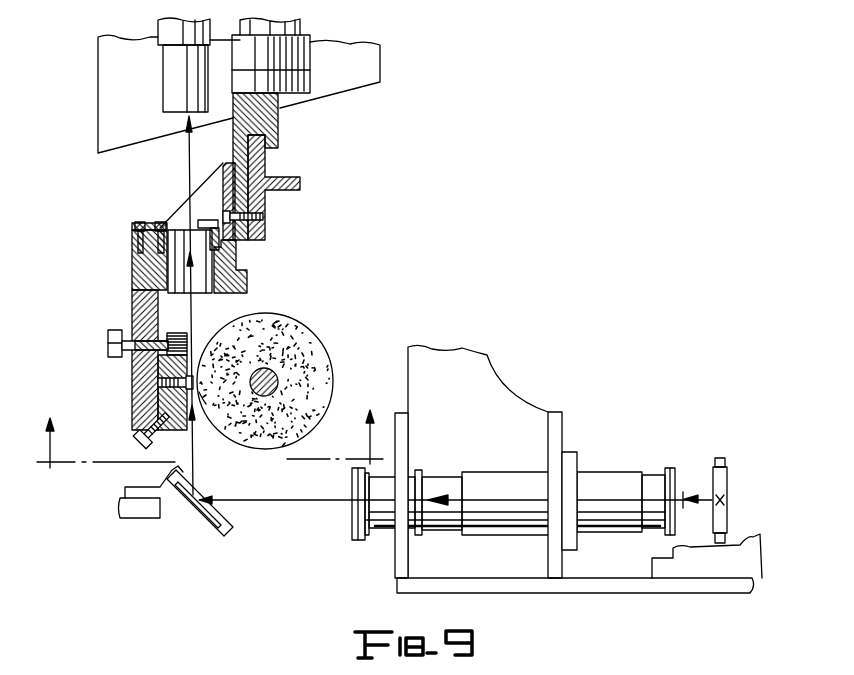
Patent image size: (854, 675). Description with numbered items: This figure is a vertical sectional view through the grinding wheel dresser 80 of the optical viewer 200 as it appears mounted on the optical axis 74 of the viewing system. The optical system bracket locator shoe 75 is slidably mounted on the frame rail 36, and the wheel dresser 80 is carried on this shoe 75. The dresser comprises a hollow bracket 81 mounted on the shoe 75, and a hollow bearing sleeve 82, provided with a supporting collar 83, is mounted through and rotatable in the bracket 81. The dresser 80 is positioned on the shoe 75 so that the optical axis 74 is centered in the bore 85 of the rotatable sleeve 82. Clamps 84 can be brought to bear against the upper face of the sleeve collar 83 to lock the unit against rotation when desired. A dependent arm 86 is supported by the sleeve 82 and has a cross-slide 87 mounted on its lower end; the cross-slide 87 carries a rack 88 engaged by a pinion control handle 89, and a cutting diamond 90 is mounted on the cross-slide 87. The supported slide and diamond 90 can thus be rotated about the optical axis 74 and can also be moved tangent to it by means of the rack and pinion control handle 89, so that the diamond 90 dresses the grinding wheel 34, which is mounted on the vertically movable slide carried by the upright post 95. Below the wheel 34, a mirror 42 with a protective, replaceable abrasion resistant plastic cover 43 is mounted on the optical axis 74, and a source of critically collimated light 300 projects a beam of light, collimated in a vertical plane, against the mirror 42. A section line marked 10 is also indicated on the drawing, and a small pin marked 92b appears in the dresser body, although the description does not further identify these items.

The optical viewer 200 is at (153, 54).
The optical system bracket locator shoe 75 is at (232, 137).
The optical axis 74 is at (188, 178).
The frame rail 36 is at (267, 163).
The clamps 84 is at (150, 222).
The supporting collar 83 is at (133, 233).
The grinding wheel dresser 80 is at (124, 285).
The hollow bracket 81 is at (237, 246).
The hollow bearing sleeve 82 is at (246, 283).
The bore 85 is at (216, 277).
The dependent arm 86 is at (132, 318).
The rack 88 is at (182, 342).
The pinion control handle 89 is at (108, 352).
The locating pin 92b is at (137, 370).
The cross-slide 87 is at (160, 406).
The grinding wheel 34 is at (302, 337).
The cutting diamond 90 is at (200, 394).
The section line 10 is at (208, 424).
The upright post 95 is at (500, 377).
The source of critically collimated light 300 is at (598, 456).
The mirror 42 is at (218, 513).
The protective, replaceable abrasion resistant plastic cover 43 is at (200, 512).